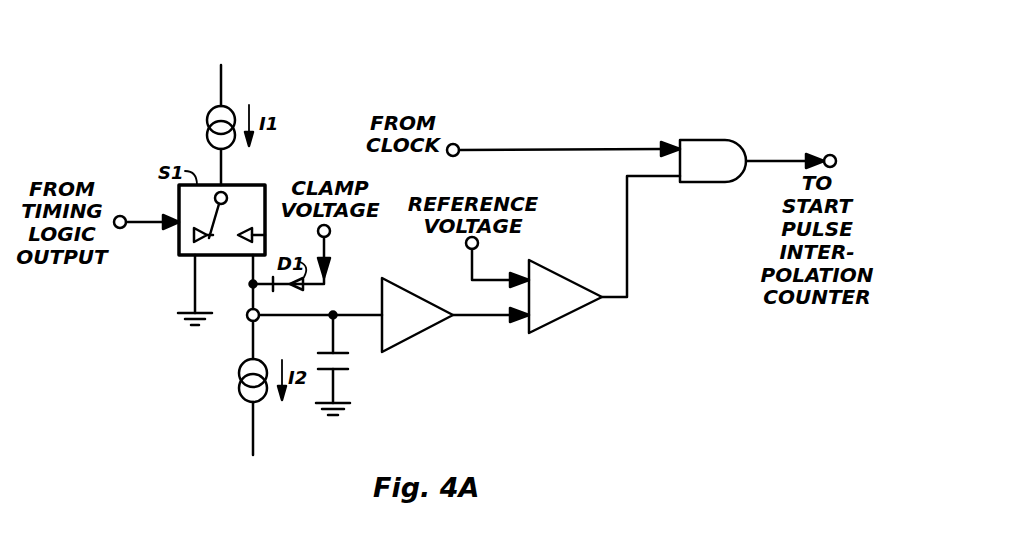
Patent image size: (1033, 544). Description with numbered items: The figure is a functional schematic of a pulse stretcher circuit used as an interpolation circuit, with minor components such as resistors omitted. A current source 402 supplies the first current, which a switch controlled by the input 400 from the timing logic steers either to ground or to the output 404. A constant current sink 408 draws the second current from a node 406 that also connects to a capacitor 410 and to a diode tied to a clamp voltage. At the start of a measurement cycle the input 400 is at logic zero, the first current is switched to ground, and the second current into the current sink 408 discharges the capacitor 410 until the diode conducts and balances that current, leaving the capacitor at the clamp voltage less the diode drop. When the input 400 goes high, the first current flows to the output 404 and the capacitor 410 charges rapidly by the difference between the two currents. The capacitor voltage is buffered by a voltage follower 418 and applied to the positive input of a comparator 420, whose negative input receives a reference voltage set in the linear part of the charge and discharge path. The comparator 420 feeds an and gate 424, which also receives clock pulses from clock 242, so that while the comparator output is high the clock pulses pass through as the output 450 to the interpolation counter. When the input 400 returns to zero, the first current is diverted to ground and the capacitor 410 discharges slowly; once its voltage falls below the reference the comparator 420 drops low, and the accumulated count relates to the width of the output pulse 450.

The clock 242 is at (531, 161).
The input 400 is at (122, 229).
The current source 402 is at (207, 118).
The output 404 is at (247, 271).
The summing node 406 is at (247, 322).
The constant current sink 408 is at (240, 396).
The capacitor 410 is at (343, 372).
The voltage follower 418 is at (413, 343).
The comparator 420 is at (563, 318).
The and gate 424 is at (704, 183).
The output 450 is at (831, 154).